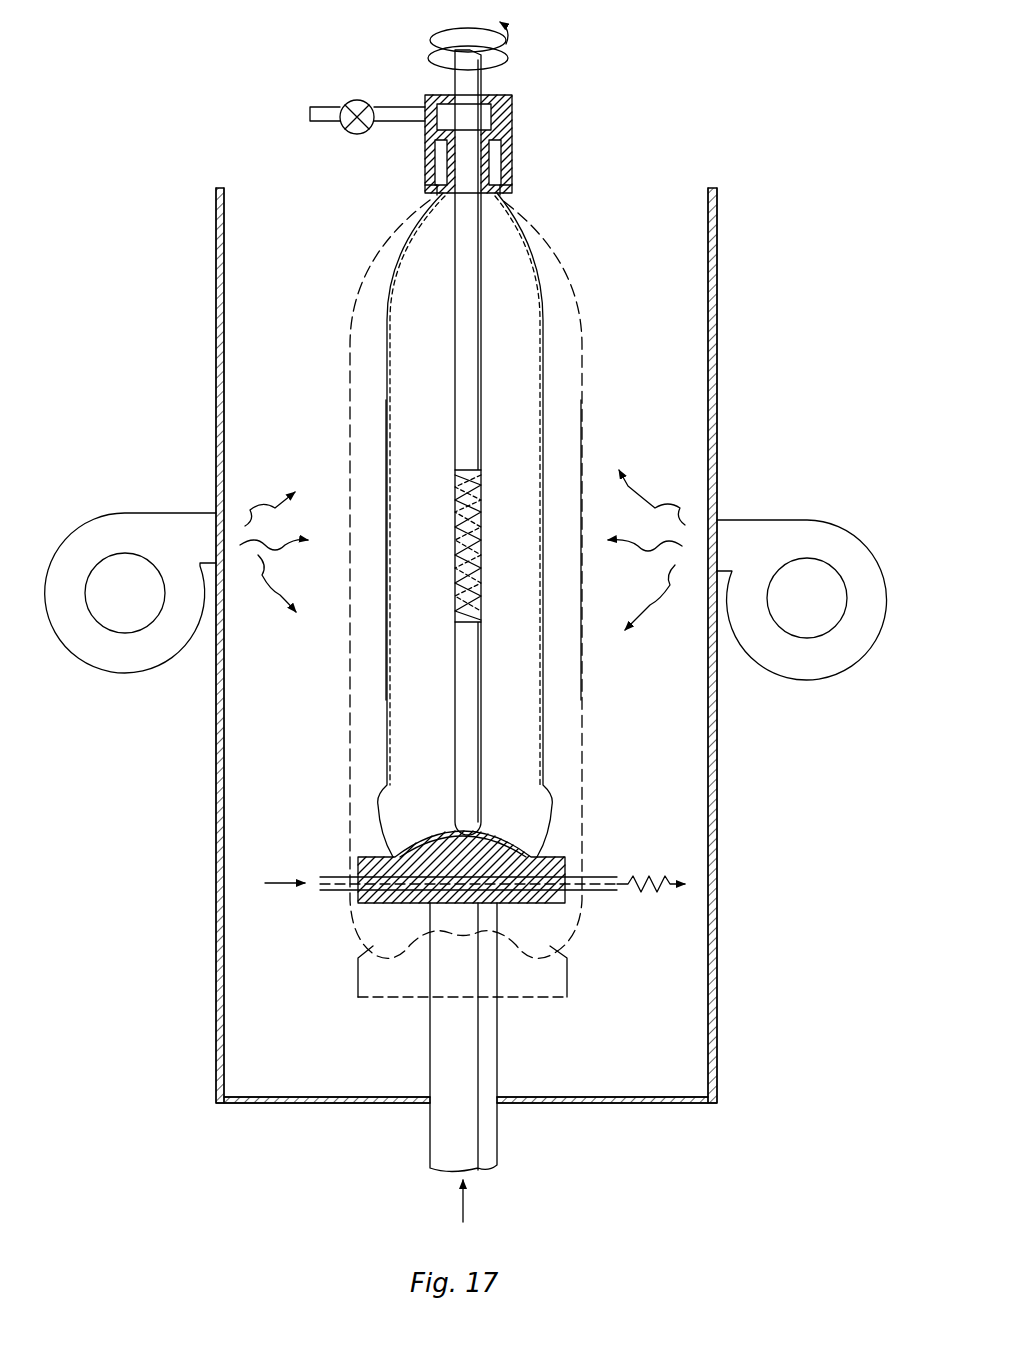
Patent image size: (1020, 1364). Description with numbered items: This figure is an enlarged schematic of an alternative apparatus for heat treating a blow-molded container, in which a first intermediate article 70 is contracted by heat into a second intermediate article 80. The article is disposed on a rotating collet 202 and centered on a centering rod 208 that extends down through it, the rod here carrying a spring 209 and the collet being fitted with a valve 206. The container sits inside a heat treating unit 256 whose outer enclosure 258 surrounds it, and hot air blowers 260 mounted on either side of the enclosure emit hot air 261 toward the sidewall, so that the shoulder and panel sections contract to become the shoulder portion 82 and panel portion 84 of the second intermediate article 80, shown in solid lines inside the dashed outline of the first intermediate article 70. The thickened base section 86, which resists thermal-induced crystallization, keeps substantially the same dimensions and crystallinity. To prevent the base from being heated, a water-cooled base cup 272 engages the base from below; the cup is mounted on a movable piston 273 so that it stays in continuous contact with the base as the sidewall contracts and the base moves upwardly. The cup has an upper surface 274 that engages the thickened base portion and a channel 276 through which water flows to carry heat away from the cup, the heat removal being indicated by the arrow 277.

The first intermediate article 70 is at (600, 345).
The second intermediate article 80 is at (546, 403).
The shoulder portion 82 is at (541, 256).
The panel portion 84 is at (578, 470).
The base section 86 is at (437, 828).
The rotating collet 202 is at (513, 120).
The valve 206 is at (352, 100).
The centering rod 208 is at (454, 352).
The spring 209 is at (458, 525).
The heat treating unit 256 is at (727, 790).
The outer enclosure 258 is at (718, 740).
The blowers 260 is at (127, 513).
The hot air 261 is at (266, 505).
The water-cooled base cup 272 is at (570, 857).
The movable piston 273 is at (498, 1142).
The upper surface 274 is at (523, 832).
The channel 276 is at (372, 857).
The arrow 277 is at (645, 898).